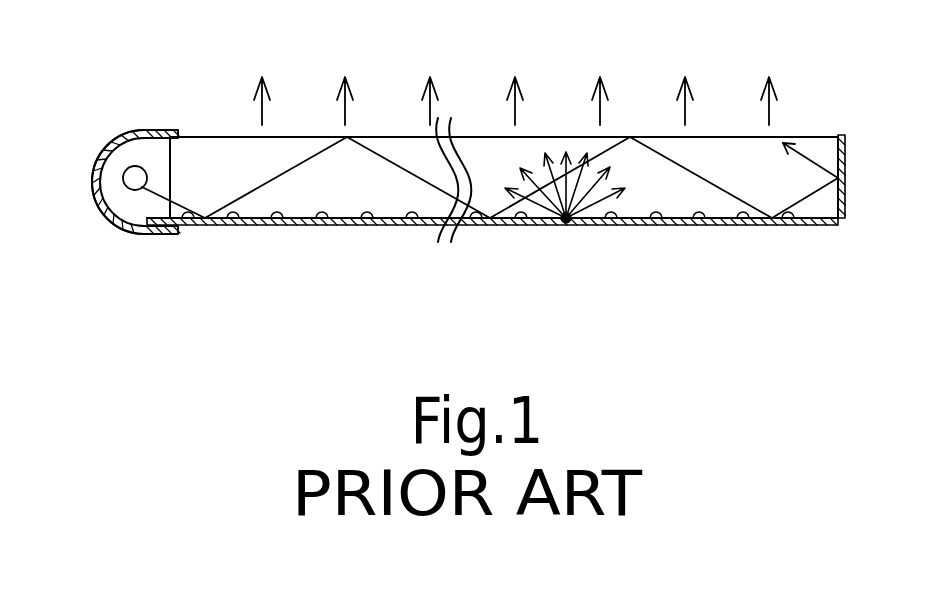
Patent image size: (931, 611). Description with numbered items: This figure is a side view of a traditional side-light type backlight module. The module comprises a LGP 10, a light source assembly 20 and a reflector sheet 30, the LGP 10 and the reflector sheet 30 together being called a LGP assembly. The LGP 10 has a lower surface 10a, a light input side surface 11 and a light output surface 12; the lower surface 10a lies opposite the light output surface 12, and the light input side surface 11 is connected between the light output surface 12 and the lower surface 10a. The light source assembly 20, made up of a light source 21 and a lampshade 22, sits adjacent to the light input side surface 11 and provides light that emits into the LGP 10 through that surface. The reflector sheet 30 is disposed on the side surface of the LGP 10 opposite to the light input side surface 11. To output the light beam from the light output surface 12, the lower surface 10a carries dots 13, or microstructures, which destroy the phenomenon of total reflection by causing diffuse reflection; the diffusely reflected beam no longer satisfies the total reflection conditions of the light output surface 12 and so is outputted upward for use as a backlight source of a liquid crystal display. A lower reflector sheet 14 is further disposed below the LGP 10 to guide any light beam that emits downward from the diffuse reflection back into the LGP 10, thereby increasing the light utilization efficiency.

The LGP 10 is at (212, 89).
The lower surface 10a is at (242, 226).
The light input side surface 11 is at (170, 163).
The light output surface 12 is at (803, 134).
The dots 13 is at (323, 226).
The lower reflector sheet 14 is at (637, 226).
The light source assembly 20 is at (117, 252).
The light source 21 is at (128, 189).
The lampshade 22 is at (102, 148).
The reflector sheet 30 is at (845, 197).